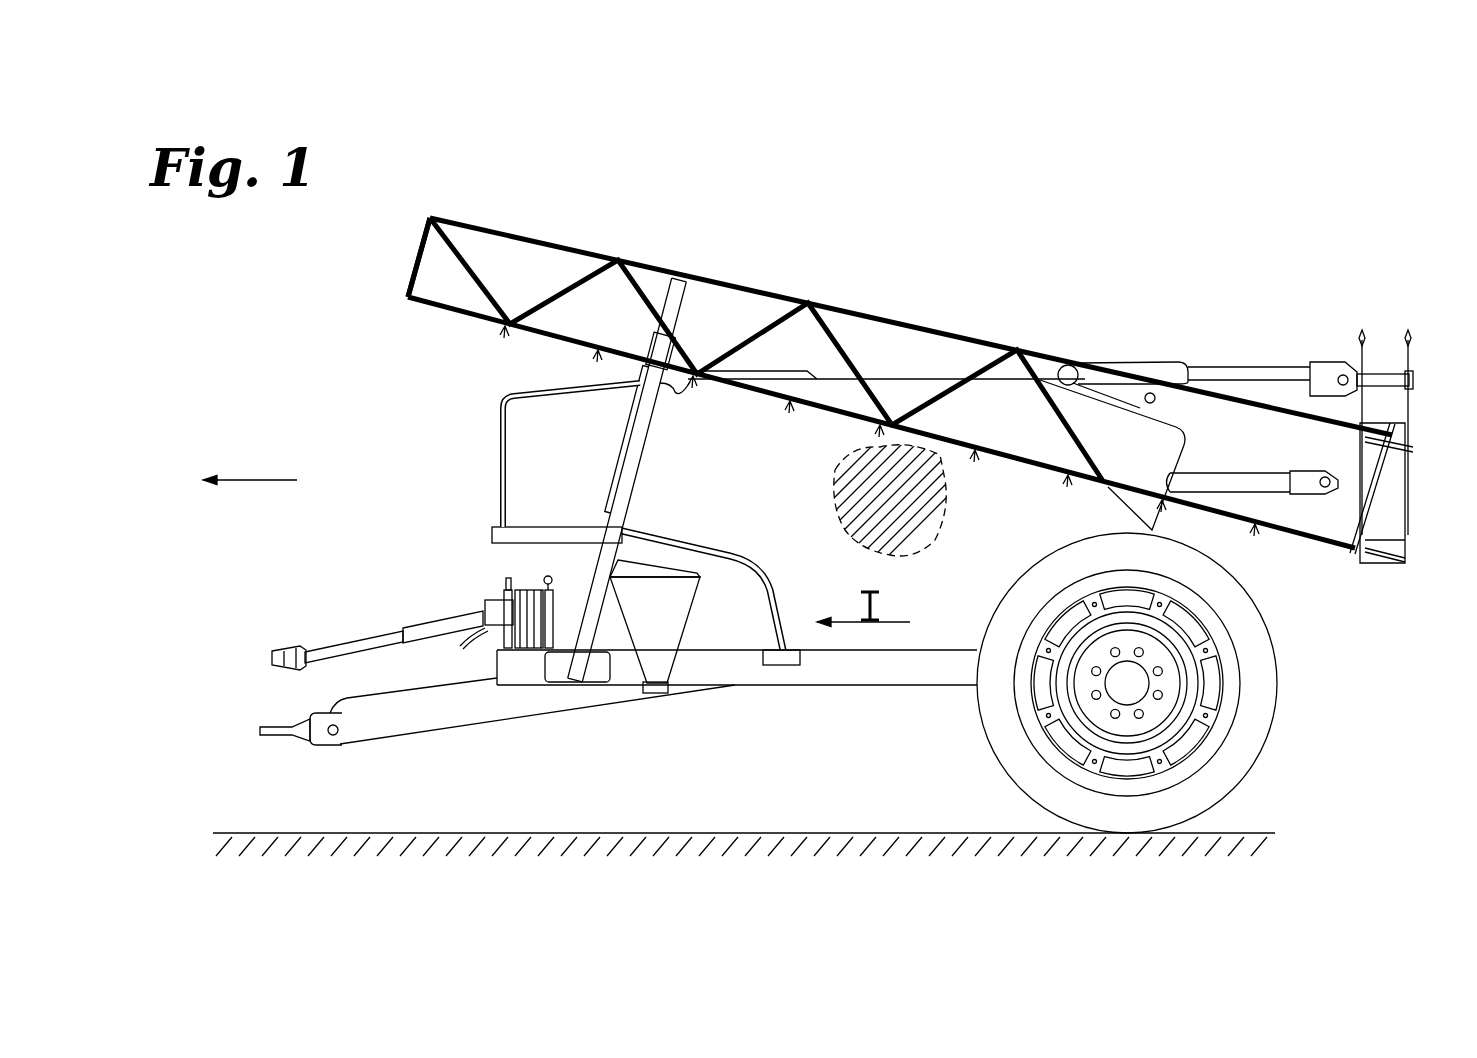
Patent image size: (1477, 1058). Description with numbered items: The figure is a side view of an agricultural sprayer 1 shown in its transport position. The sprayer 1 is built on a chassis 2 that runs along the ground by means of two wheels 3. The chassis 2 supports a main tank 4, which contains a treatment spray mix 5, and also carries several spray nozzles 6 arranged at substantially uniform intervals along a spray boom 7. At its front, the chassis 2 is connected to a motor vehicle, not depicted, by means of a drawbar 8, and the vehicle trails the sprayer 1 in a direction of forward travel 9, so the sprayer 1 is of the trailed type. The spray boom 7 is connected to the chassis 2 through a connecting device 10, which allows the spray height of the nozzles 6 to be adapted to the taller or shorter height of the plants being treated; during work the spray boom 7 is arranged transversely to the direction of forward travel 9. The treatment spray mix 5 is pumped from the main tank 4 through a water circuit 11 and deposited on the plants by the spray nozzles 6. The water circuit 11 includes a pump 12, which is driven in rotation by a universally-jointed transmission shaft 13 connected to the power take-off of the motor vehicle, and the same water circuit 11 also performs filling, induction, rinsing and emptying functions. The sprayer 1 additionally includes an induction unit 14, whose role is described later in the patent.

The agricultural sprayer 1 is at (1040, 267).
The chassis 2 is at (883, 692).
The wheels 3 is at (1262, 757).
The main tank 4 is at (946, 377).
The treatment spray mix 5 is at (877, 482).
The spray nozzles 6 is at (500, 330).
The spray boom 7 is at (387, 292).
The drawbar 8 is at (262, 765).
The direction of forward travel 9 is at (240, 480).
The connecting device 10 is at (1278, 335).
The water circuit 11 is at (737, 287).
The pump 12 is at (478, 630).
The universally-jointed transmission shaft 13 is at (380, 632).
The induction unit 14 is at (683, 528).